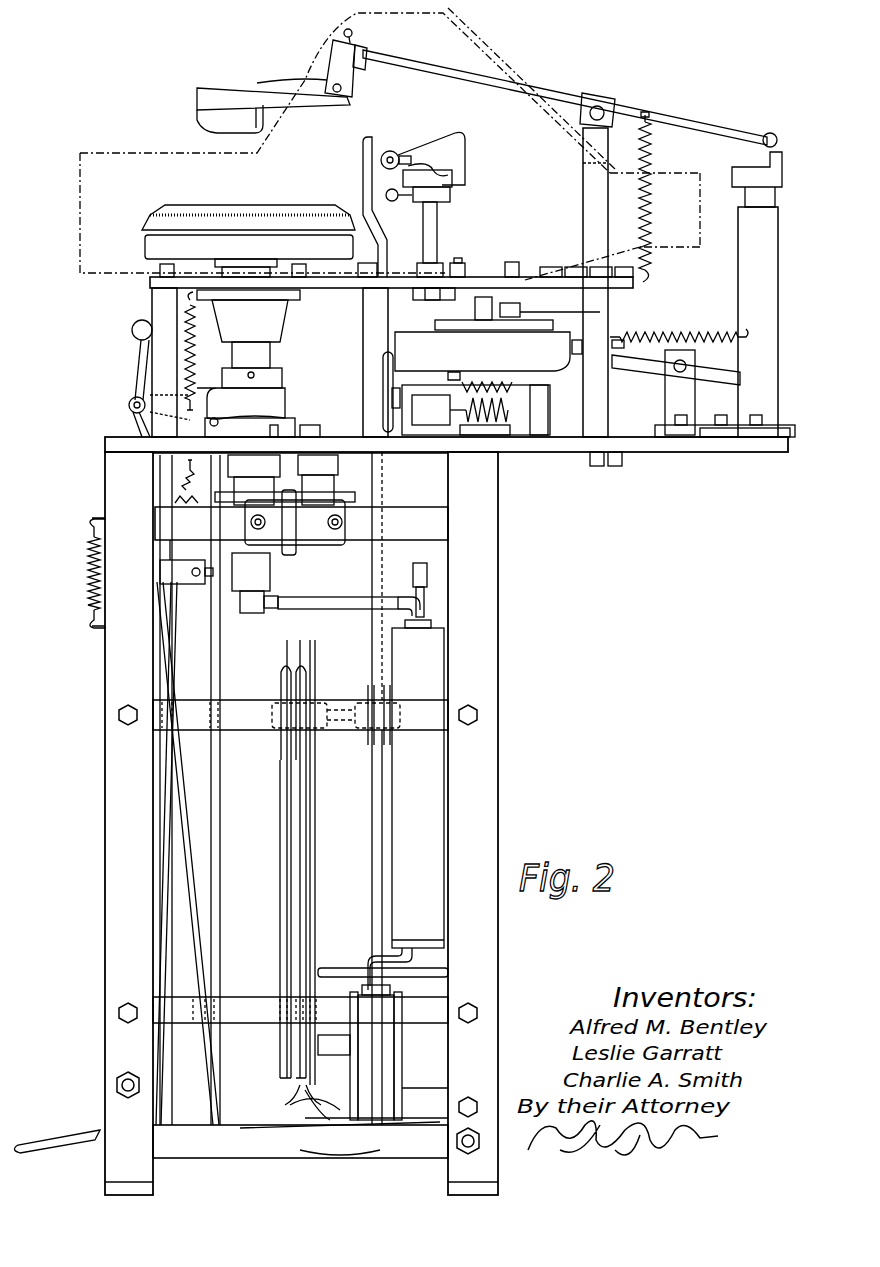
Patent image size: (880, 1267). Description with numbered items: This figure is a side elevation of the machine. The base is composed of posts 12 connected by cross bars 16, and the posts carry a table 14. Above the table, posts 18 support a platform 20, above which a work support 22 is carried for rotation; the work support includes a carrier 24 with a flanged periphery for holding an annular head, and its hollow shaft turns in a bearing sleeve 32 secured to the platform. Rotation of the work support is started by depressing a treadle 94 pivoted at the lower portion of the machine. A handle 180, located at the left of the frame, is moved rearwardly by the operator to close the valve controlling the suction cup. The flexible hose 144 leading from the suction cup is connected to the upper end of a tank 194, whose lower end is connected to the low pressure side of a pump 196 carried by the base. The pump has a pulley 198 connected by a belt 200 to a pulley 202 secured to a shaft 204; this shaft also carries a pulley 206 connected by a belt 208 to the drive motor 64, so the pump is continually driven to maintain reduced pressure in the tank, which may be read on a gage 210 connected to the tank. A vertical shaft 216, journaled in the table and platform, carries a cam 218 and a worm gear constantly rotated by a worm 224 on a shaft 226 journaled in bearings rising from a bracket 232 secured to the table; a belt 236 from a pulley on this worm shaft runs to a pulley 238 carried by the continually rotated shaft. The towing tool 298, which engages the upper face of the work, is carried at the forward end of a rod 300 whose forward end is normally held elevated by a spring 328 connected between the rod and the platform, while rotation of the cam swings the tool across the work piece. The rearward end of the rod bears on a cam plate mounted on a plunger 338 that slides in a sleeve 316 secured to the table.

The posts 12 is at (488, 828).
The table 14 is at (418, 448).
The cross bars 16 is at (258, 730).
The posts 18 is at (150, 300).
The platform 20 is at (462, 280).
The work support 22 is at (138, 213).
The carrier 24 is at (145, 248).
The bearing sleeve 32 is at (272, 328).
The drive motor 64 is at (330, 982).
The treadle 94 is at (50, 1125).
The flexible hose 144 is at (318, 592).
The handle 180 is at (133, 360).
The tank 194 is at (430, 690).
The pump 196 is at (385, 1079).
The pulley 198 is at (300, 1095).
The belt 200 is at (316, 920).
The pulley 202 is at (320, 672).
The shaft 204 is at (330, 703).
The pulley 206 is at (284, 664).
The belt 208 is at (302, 890).
The gage 210 is at (430, 578).
The vertical shaft 216 is at (472, 305).
The cam 218 is at (550, 356).
The worm 224 is at (490, 435).
The shaft 226 is at (440, 400).
The bracket 232 is at (535, 435).
The belt 236 is at (380, 560).
The pulley 238 is at (365, 745).
The towing tool 298 is at (172, 105).
The rod 300 is at (445, 78).
The sleeve 316 is at (740, 283).
The spring 328 is at (644, 210).
The plunger 338 is at (735, 190).